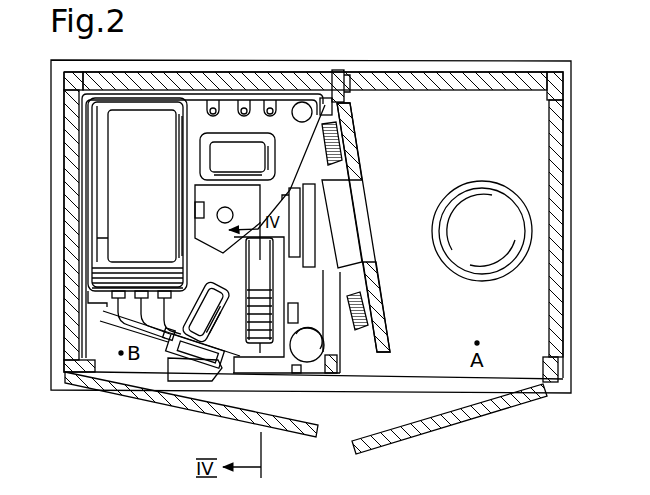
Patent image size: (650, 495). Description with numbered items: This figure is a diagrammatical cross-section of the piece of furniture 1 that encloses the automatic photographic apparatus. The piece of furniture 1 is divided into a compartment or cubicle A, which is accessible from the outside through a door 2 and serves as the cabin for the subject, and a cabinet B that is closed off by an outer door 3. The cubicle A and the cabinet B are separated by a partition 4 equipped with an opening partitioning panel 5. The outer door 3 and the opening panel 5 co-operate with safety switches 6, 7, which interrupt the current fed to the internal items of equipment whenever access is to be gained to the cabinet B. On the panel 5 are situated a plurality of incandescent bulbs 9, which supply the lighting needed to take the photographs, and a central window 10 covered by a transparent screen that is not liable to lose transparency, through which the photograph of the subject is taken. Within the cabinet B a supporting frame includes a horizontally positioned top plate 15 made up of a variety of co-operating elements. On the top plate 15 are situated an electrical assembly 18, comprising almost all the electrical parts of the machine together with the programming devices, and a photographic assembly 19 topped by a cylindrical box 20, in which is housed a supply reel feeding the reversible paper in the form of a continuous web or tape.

The piece of furniture 1 is at (531, 52).
The door 2 is at (468, 412).
The outer door 3 is at (203, 410).
The partition 4 is at (337, 372).
The opening partitioning panel 5 is at (382, 335).
The safety switch 6 is at (298, 366).
The safety switch 7 is at (330, 103).
The incandescent bulbs 9 is at (333, 141).
The central window 10 is at (360, 222).
The top plate 15 is at (258, 110).
The electrical assembly 18 is at (143, 117).
The photographic assembly 19 is at (293, 275).
The cylindrical box 20 is at (252, 288).